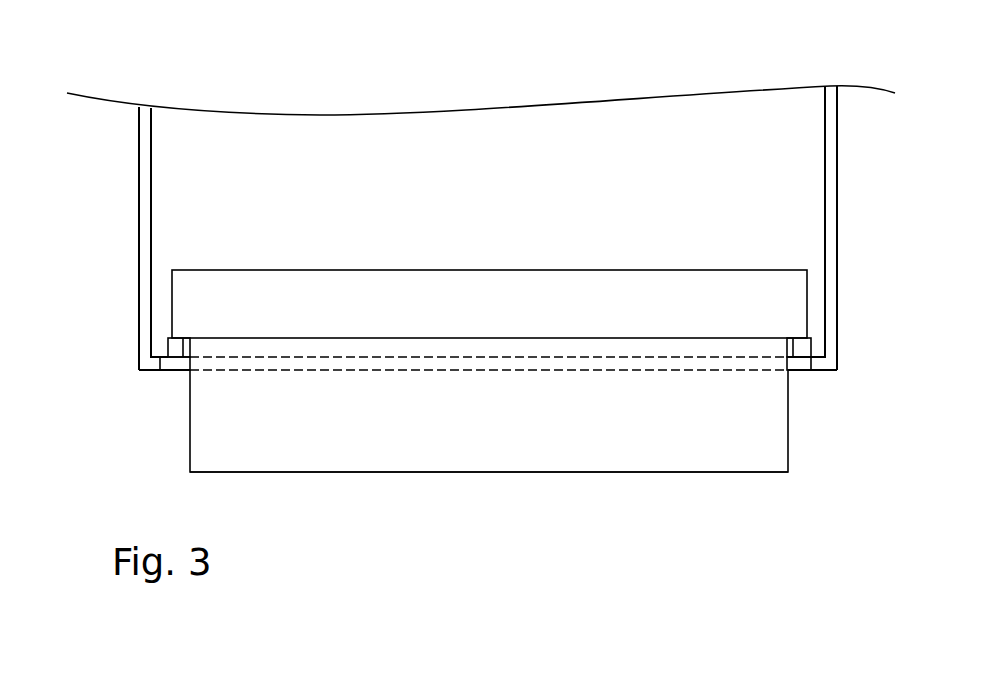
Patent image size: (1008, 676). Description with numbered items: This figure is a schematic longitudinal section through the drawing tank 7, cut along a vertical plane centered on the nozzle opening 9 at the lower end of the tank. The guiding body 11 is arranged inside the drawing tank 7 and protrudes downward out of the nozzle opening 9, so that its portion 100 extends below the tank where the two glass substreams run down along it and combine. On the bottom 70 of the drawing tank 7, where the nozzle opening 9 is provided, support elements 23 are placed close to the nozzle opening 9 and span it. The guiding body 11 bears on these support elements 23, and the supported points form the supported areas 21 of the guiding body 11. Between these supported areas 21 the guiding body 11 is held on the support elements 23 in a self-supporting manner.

The drawing tank 7 is at (139, 222).
The nozzle opening 9 is at (795, 367).
The guiding body 11 is at (645, 473).
The supported areas 21 is at (168, 341).
The support elements 23 is at (173, 358).
The bottom 70 is at (148, 372).
The portion of the guiding body 100 is at (425, 432).